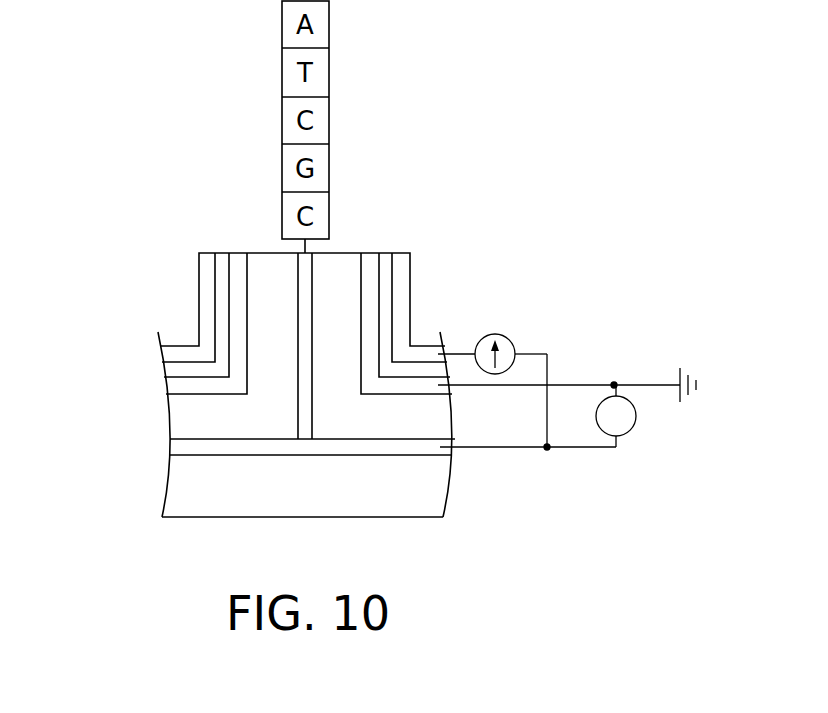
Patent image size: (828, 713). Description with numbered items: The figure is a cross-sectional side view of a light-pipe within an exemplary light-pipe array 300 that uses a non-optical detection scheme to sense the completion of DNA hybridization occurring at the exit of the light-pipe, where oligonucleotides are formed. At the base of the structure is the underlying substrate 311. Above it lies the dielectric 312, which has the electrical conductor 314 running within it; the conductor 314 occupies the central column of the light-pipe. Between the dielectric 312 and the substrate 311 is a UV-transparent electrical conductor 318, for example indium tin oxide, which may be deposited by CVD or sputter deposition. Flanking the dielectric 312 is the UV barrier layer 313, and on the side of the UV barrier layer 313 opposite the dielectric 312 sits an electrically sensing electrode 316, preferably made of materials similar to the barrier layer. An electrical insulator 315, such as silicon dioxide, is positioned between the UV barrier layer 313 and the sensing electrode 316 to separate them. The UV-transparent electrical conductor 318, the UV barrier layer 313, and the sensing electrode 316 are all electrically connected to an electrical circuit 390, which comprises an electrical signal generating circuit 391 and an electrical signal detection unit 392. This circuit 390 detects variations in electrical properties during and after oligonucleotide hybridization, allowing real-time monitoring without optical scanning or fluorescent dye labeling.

The light-pipe array 300 is at (194, 527).
The substrate 311 is at (203, 493).
The dielectric 312 is at (220, 420).
The UV barrier layer 313 is at (240, 330).
The electrical conductor 314 is at (306, 330).
The electrical insulator 315 is at (388, 293).
The sensing electrode 316 is at (400, 270).
The UV-transparent electrical conductor 318 is at (185, 448).
The electrical circuit 390 is at (583, 482).
The electrical signal generating circuit 391 is at (507, 338).
The electrical signal detection unit 392 is at (637, 422).